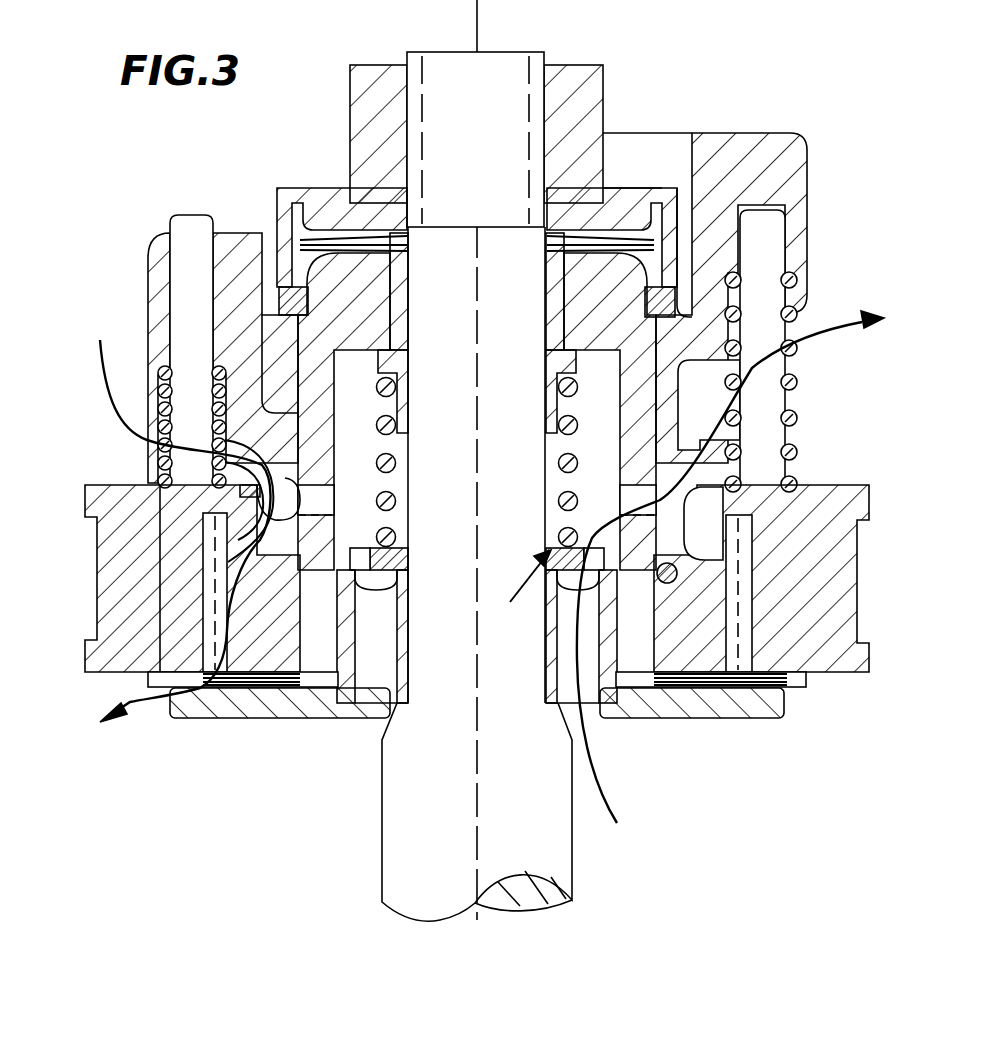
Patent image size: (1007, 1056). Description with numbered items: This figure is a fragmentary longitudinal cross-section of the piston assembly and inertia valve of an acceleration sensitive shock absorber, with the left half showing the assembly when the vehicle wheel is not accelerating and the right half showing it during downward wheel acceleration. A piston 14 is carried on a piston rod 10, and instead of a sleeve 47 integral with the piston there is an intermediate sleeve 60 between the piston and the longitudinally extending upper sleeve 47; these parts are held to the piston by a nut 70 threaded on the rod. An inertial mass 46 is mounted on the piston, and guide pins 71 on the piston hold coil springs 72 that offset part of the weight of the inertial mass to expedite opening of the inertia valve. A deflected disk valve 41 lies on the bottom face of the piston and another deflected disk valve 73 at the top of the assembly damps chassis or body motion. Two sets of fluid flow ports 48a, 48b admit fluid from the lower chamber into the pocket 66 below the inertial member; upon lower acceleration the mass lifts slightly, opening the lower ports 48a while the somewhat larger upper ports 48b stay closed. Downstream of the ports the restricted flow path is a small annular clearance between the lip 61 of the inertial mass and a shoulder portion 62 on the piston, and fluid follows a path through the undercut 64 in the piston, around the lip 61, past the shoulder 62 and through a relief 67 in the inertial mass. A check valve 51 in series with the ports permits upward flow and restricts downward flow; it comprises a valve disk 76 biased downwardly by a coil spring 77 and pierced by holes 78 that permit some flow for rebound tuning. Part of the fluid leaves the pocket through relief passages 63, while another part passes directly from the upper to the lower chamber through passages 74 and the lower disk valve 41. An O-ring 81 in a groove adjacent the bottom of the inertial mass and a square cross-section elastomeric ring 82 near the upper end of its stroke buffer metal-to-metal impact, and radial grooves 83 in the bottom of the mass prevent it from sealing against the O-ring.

The piston rod 10 is at (412, 834).
The piston 14 is at (846, 485).
The deflected disk valve 41 is at (782, 682).
The inertial mass 46 is at (152, 264).
The sleeve 47 is at (277, 192).
The lower fluid flow ports 48a is at (320, 527).
The upper fluid flow ports 48b is at (320, 498).
The check valve 51 is at (519, 596).
The intermediate sleeve 60 is at (656, 346).
The lip 61 is at (208, 538).
The shoulder portion 62 is at (246, 463).
The relief passages 63 is at (238, 660).
The undercut 64 is at (202, 492).
The pocket 66 is at (697, 527).
The relief 67 is at (592, 505).
The nut 70 is at (582, 92).
The guide pins 71 is at (182, 226).
The coil springs 72 is at (163, 455).
The deflected disk valve 73 is at (300, 236).
The passages 74 is at (178, 607).
The valve disk 76 is at (406, 549).
The coil spring 77 is at (393, 463).
The holes 78 is at (364, 573).
The O-ring 81 is at (674, 590).
The square cross-section elastomeric ring 82 is at (674, 300).
The radial grooves 83 is at (648, 530).